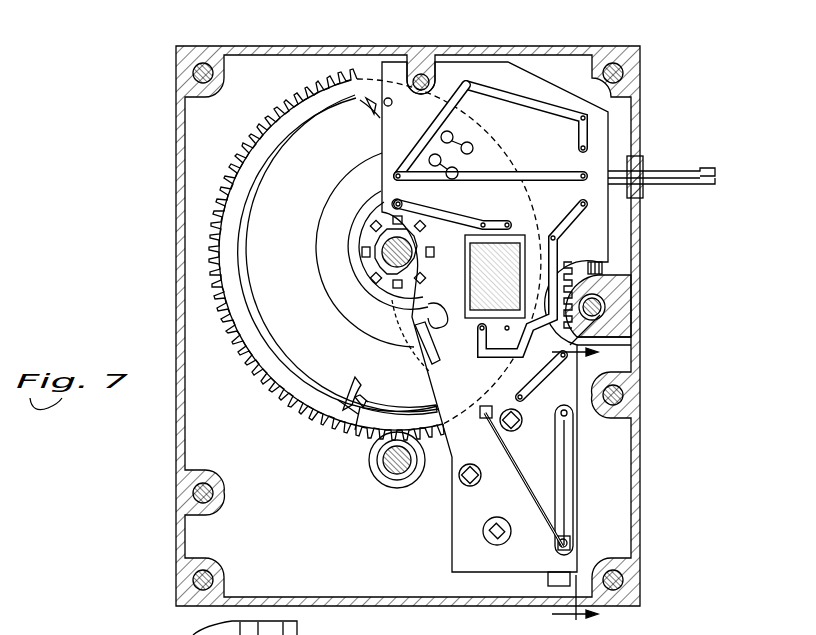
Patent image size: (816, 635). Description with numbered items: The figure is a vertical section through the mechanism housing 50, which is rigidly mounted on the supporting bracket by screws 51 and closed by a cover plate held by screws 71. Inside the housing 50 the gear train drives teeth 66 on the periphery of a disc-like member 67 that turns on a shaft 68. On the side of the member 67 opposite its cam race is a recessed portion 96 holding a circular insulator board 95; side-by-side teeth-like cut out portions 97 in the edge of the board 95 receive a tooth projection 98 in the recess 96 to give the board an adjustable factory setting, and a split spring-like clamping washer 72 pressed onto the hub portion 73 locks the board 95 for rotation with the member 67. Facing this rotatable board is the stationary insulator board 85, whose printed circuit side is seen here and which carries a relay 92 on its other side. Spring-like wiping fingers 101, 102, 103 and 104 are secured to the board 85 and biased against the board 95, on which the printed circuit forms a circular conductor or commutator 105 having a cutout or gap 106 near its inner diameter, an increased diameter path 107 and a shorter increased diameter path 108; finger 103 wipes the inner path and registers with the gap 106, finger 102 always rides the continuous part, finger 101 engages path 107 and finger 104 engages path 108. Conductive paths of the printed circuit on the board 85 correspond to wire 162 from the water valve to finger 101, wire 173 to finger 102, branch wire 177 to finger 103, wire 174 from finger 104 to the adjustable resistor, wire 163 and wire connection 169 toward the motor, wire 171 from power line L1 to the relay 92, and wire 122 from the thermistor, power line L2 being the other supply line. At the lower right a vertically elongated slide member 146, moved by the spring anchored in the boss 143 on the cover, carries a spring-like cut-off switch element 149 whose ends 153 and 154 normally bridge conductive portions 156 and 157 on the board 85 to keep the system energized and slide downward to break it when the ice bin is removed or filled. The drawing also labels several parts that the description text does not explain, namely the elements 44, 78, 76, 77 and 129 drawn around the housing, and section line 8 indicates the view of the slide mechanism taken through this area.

The housing 50 is at (176, 149).
The screws 71 is at (193, 73).
The screws 51 is at (193, 493).
The teeth 66 is at (372, 226).
The disc-like member 67 is at (311, 97).
The recessed portion 96 is at (268, 145).
The circular conductor or commutator 105 is at (308, 198).
The shaft 68 is at (369, 247).
The split spring-like clamping washer 72 is at (380, 230).
The hub portion 73 is at (380, 245).
The insulator board 85 is at (540, 73).
The wire 163 is at (588, 130).
The wire 162 is at (575, 170).
The wire 171 is at (590, 220).
The wiping finger or brush 101 is at (448, 126).
The wire 173 is at (473, 156).
The wiping finger or brush 102 is at (382, 140).
The wire connection 169 is at (367, 104).
The branch wire 177 is at (388, 200).
The relay 92 is at (478, 330).
The end of switch element 153 is at (598, 438).
The cut-off switch element 149 is at (566, 496).
The slide member 146 is at (572, 470).
The conductive portion 156 is at (566, 426).
The conductive portion 157 is at (566, 540).
The end of switch element 154 is at (572, 546).
The wire 174 is at (490, 424).
The pivot 78 is at (433, 466).
The boss 143 is at (548, 582).
The screw 44 is at (400, 475).
The cutout or gap 106 is at (400, 312).
The wiping finger or brush 103 is at (418, 342).
The wiping finger or brush 104 is at (445, 368).
The increased diameter part or path 107 is at (430, 381).
The increased diameter part or path 108 is at (432, 405).
The teeth-like cut out portions 97 is at (343, 382).
The circular insulator board 95 is at (307, 388).
The tooth projection 98 is at (355, 430).
The bracket 76 is at (600, 338).
The screw 77 is at (602, 306).
The wire 122 is at (598, 262).
The pinion 129 is at (604, 272).
The power line L1 is at (698, 171).
The power line L2 is at (715, 184).
The section line 8 is at (576, 475).